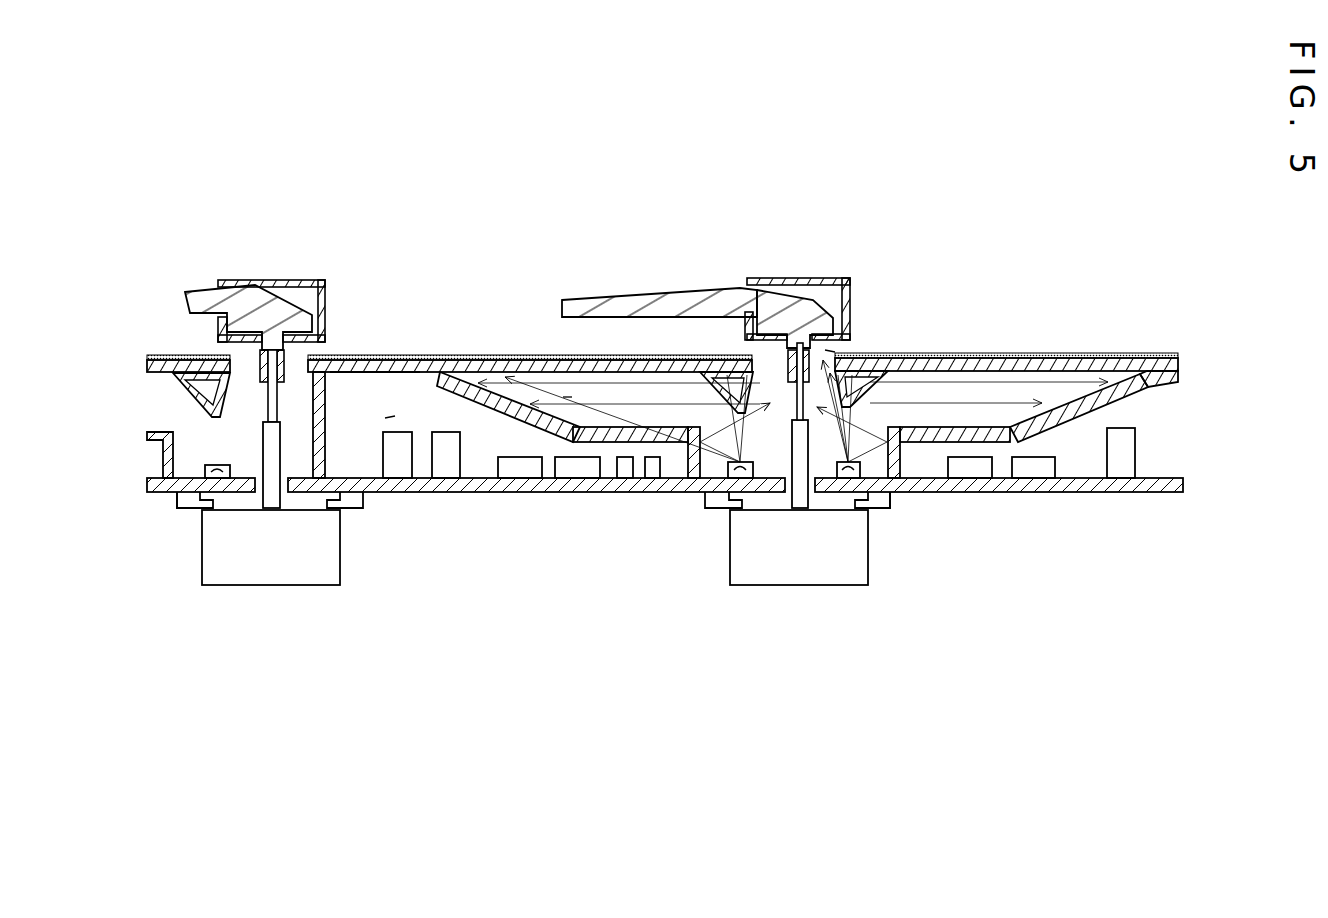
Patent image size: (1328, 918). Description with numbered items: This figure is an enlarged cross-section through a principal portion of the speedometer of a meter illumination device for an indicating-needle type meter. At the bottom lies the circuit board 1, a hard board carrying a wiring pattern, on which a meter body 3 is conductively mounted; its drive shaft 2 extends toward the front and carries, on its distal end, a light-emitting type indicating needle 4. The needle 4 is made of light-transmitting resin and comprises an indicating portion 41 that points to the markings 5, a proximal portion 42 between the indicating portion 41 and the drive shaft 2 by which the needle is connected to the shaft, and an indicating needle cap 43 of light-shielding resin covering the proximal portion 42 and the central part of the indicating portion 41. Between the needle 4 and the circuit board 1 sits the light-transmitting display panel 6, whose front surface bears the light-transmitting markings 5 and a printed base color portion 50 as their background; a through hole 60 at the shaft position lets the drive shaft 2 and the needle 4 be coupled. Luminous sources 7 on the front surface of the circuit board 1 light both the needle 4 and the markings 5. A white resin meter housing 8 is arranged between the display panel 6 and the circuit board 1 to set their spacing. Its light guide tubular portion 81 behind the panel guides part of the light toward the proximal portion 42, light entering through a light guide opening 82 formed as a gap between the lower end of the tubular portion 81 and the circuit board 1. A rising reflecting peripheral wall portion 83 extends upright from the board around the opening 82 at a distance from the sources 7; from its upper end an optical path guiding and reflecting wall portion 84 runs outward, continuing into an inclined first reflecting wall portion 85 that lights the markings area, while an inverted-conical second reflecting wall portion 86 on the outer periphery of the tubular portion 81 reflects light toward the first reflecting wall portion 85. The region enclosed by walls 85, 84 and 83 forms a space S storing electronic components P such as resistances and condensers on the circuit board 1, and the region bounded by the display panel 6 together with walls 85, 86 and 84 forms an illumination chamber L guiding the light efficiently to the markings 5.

The circuit board 1 is at (1162, 483).
The drive shaft 2 is at (273, 402).
The meter body 3 is at (280, 560).
The indicating needle 4 is at (711, 314).
The indicating portion 41 is at (645, 307).
The proximal portion 42 is at (793, 323).
The indicating needle cap 43 is at (833, 280).
The markings 5 is at (1107, 348).
The display panel 6 is at (965, 362).
The through hole 60 is at (825, 350).
The luminous sources 7 is at (220, 483).
The meter housing 8 is at (1157, 377).
The light guide tubular portion 81 is at (193, 358).
The light guide opening 82 is at (222, 435).
The rising reflecting peripheral wall portion 83 is at (165, 445).
The optical path guiding and reflecting wall portion 84 is at (625, 433).
The first reflecting wall portion 85 is at (495, 410).
The second reflecting wall portion 86 is at (200, 385).
The base color portion 50 is at (377, 353).
The space S is at (390, 417).
The illumination chamber L is at (568, 397).
The electronic components P is at (448, 470).